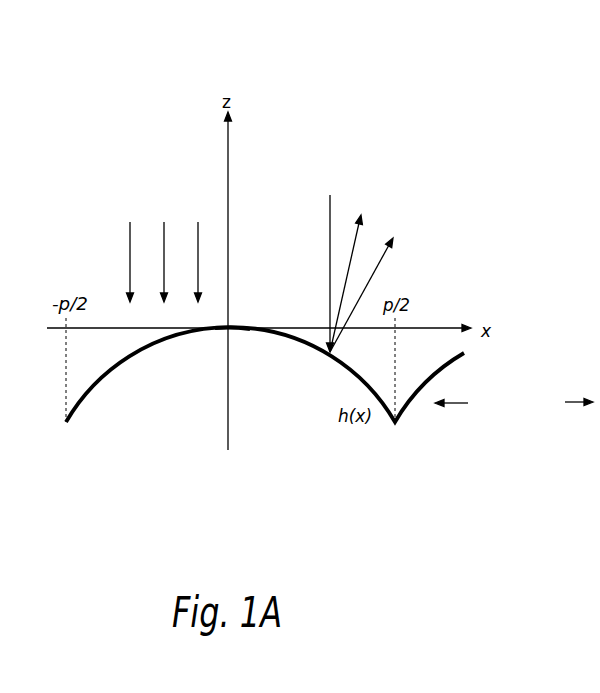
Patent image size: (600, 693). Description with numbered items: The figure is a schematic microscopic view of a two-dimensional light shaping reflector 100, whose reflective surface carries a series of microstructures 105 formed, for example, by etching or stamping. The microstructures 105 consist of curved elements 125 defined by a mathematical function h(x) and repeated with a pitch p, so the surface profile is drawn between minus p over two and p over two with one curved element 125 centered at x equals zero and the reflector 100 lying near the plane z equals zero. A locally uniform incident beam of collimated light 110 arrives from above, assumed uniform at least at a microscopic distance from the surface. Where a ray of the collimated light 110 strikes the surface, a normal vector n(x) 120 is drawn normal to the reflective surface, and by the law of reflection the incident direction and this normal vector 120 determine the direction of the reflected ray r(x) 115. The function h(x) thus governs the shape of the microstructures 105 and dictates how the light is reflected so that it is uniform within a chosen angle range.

The light shaping reflector 100 is at (235, 68).
The microstructures 105 is at (103, 380).
The collimated light 110 is at (123, 252).
The reflected ray r(x) 115 is at (385, 258).
The normal vector n(x) 120 is at (365, 234).
The curved element 125 is at (248, 332).